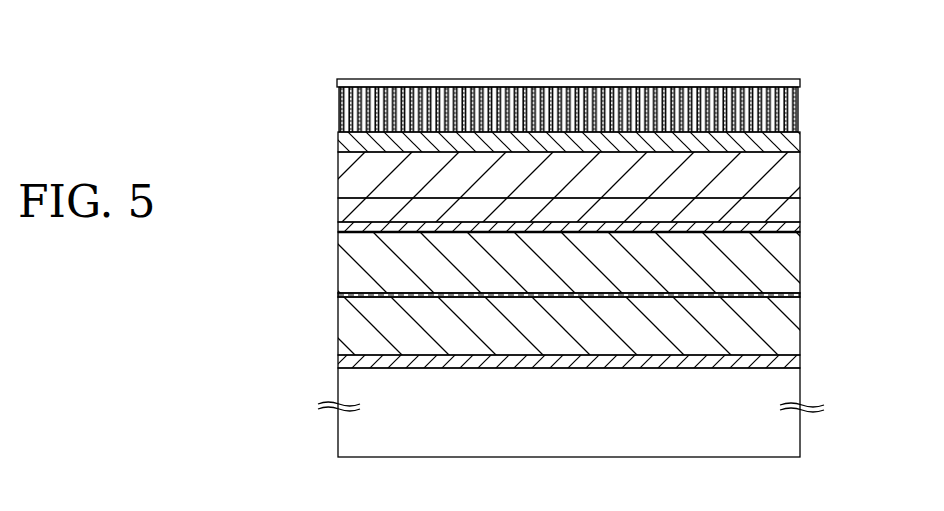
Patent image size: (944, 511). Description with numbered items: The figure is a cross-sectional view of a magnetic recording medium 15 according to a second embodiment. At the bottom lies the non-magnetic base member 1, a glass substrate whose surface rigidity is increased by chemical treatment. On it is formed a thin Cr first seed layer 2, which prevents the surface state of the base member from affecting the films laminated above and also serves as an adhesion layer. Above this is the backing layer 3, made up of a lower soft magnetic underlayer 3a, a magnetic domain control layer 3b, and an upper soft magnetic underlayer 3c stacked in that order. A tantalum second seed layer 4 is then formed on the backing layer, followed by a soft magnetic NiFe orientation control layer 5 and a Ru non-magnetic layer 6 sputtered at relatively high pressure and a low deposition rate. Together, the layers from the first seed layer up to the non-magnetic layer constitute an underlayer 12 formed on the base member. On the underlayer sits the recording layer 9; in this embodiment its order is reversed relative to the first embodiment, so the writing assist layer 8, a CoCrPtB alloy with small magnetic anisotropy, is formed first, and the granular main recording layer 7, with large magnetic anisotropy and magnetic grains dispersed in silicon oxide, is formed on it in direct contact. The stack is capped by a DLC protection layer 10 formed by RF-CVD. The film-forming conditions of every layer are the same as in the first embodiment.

The non-magnetic base member 1 is at (485, 440).
The first seed layer 2 is at (342, 370).
The backing layer 3 is at (270, 242).
The lower soft magnetic underlayer 3a is at (343, 331).
The magnetic domain control layer 3b is at (342, 295).
The upper soft magnetic underlayer 3c is at (342, 267).
The second seed layer 4 is at (340, 228).
The orientation control layer 5 is at (343, 212).
The non-magnetic layer 6 is at (356, 180).
The main recording layer 7 is at (797, 110).
The writing assist layer 8 is at (797, 146).
The recording layer 9 is at (861, 83).
The protection layer 10 is at (725, 84).
The underlayer 12 is at (815, 155).
The magnetic recording medium 15 is at (232, 80).